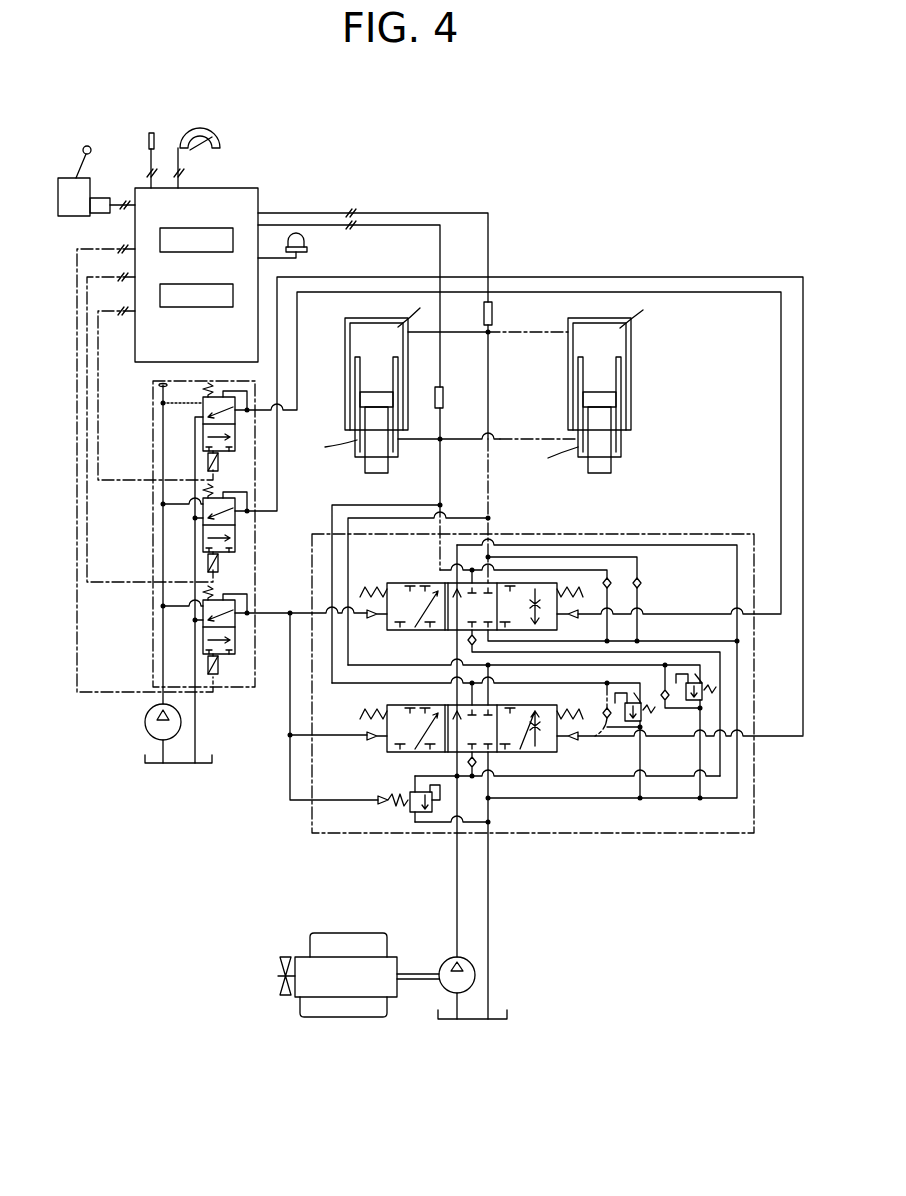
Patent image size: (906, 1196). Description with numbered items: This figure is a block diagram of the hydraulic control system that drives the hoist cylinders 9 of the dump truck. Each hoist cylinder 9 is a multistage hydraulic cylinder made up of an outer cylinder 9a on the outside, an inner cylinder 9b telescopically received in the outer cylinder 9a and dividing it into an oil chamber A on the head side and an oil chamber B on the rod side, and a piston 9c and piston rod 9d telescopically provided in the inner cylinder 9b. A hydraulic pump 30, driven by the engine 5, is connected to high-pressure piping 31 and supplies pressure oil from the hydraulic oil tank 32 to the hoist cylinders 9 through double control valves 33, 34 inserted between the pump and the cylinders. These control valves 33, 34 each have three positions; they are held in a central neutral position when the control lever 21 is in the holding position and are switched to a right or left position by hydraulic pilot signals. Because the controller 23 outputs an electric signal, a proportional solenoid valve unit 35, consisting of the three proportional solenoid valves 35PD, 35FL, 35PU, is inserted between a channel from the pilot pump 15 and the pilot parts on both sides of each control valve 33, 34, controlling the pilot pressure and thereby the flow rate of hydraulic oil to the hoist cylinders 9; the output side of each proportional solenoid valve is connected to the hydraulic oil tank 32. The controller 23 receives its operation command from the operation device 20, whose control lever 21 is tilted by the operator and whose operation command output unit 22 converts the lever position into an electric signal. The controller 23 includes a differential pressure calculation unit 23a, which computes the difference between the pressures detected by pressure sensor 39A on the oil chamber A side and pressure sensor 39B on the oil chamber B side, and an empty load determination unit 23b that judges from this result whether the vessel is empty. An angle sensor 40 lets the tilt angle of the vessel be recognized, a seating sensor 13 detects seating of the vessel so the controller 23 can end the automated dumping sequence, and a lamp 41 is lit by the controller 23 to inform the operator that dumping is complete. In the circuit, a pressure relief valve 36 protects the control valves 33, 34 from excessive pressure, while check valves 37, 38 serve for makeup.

The engine 5 is at (355, 990).
The hoist cylinder 9 is at (490, 365).
The outer cylinder 9a is at (345, 336).
The inner cylinder 9b is at (354, 368).
The piston 9c is at (366, 399).
The piston rod 9d is at (375, 462).
The seating sensor 13 is at (149, 130).
The pilot pump 15 is at (144, 716).
The operation device 20 is at (62, 216).
The control lever 21 is at (84, 166).
The operation command output unit 22 is at (100, 213).
The controller 23 is at (232, 188).
The differential pressure calculation unit 23a is at (178, 228).
The empty load determination unit 23b is at (178, 284).
The hydraulic pump 30 is at (445, 958).
The high-pressure piping 31 is at (455, 900).
The hydraulic oil tank 32 is at (178, 768).
The control valve 33 is at (550, 753).
The control valve 34 is at (533, 583).
The proportional solenoid valve unit 35 is at (151, 393).
The proportional solenoid valve 35PD is at (203, 446).
The proportional solenoid valve 35FL is at (203, 550).
The proportional solenoid valve 35PU is at (203, 652).
The pressure relief valve 36 is at (413, 812).
The check valve 37 is at (606, 714).
The check valve 38 is at (612, 581).
The pressure sensor 39A is at (492, 313).
The pressure sensor 39B is at (442, 392).
The angle sensor 40 is at (198, 128).
The lamp 41 is at (305, 242).